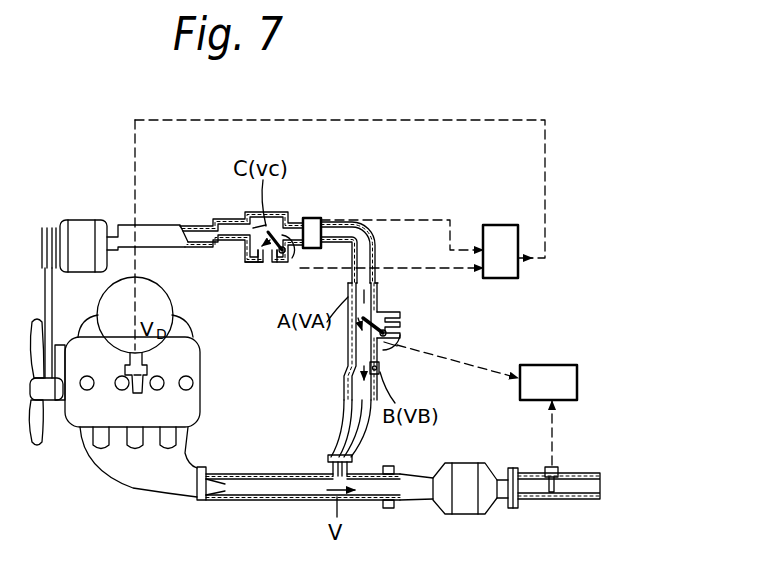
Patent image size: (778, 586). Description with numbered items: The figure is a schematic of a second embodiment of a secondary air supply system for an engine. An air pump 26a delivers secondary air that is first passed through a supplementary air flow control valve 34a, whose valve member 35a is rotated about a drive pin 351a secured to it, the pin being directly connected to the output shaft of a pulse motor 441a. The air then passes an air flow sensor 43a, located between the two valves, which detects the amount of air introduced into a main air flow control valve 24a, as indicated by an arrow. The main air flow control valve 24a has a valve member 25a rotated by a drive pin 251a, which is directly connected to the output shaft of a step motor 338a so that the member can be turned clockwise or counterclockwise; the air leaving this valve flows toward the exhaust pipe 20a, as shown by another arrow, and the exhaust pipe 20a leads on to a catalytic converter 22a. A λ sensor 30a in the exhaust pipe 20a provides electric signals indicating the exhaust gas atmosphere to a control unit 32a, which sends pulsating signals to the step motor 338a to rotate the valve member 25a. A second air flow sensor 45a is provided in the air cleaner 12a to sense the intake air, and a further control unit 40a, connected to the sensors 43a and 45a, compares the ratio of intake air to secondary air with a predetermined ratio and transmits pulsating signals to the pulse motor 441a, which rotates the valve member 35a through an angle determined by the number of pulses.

The air cleaner 12a is at (152, 292).
The exhaust pipe 20a is at (240, 500).
The catalytic converter 22a is at (462, 505).
The main air flow control valve 24a is at (340, 343).
The valve member 25a is at (385, 312).
The drive pin 251a is at (392, 348).
The air pump 26a is at (81, 220).
The λ sensor 30a is at (565, 478).
The control unit 32a is at (577, 385).
The step motor 338a is at (383, 368).
The supplementary air flow control valve 34a is at (350, 177).
The valve member 35a is at (243, 262).
The drive pin 351a is at (283, 258).
The control unit 40a is at (500, 225).
The air flow sensor 43a is at (318, 219).
The pulse motor 441a is at (292, 255).
The second air flow sensor 45a is at (147, 366).